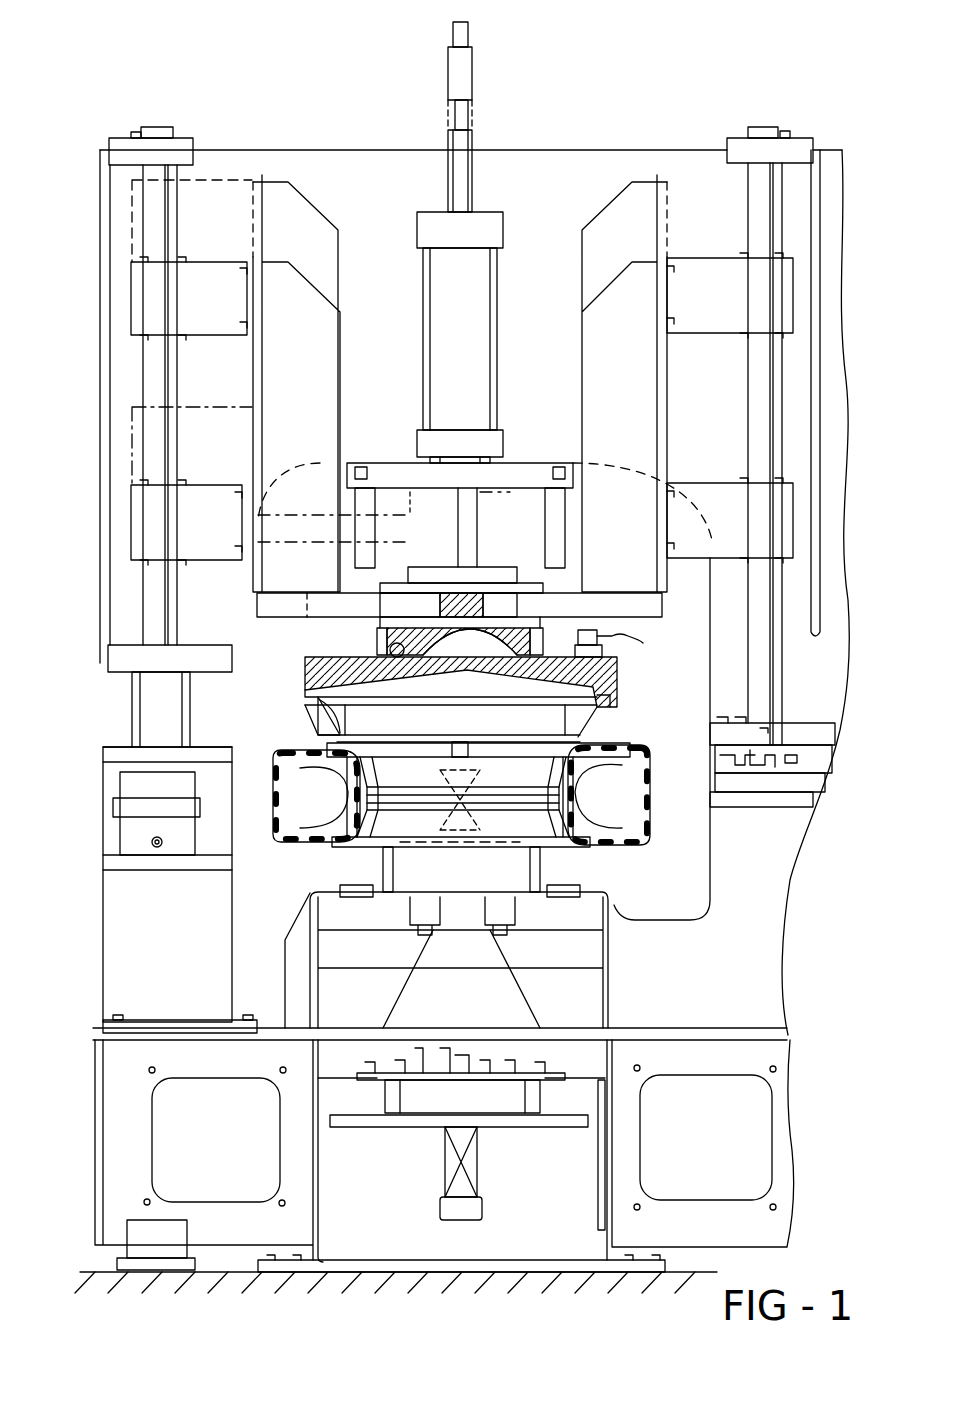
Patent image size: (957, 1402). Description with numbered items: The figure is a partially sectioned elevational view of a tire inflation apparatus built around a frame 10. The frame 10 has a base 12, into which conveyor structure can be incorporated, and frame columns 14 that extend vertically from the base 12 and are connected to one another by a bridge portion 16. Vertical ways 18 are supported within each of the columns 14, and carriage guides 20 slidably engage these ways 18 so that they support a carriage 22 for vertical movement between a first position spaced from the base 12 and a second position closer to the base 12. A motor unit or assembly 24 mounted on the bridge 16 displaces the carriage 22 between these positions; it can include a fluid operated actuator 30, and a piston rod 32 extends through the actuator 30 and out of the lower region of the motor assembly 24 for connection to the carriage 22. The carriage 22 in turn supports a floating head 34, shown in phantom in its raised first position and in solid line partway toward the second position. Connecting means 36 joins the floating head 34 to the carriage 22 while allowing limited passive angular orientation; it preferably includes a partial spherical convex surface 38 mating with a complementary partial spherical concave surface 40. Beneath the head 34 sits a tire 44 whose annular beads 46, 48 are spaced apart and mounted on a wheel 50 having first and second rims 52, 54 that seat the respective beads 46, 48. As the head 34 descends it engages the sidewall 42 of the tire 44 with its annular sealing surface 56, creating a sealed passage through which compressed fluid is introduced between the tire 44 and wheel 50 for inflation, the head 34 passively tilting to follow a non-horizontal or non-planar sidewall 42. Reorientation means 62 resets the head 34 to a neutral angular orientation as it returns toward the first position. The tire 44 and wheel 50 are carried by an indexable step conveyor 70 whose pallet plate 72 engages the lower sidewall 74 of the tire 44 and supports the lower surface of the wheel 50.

The frame 10 is at (737, 45).
The base 12 is at (768, 1060).
The frame columns 14 is at (123, 925).
The bridge portion 16 is at (388, 158).
The vertical ways 18 is at (130, 370).
The carriage guides 20 is at (142, 607).
The carriage 22 is at (610, 293).
The motor unit or assembly 24 is at (497, 270).
The fluid operated actuator 30 is at (476, 340).
The piston rod 32 is at (478, 538).
The floating head 34 is at (665, 702).
The connecting means 36 is at (518, 625).
The partial spherical convex surface 38 is at (408, 622).
The partial spherical concave surface 40 is at (305, 662).
The sidewall 42 is at (347, 770).
The tire 44 is at (278, 815).
The annular bead 46 is at (640, 767).
The annular bead 48 is at (573, 813).
The wheel 50 is at (403, 800).
The first rim 52 is at (283, 782).
The second rim 54 is at (357, 818).
The annular sealing surface 56 is at (360, 733).
The reorientation means 62 is at (353, 505).
The indexable step conveyor 70 is at (547, 880).
The pallet plate 72 is at (573, 857).
The lower sidewall 74 is at (633, 843).